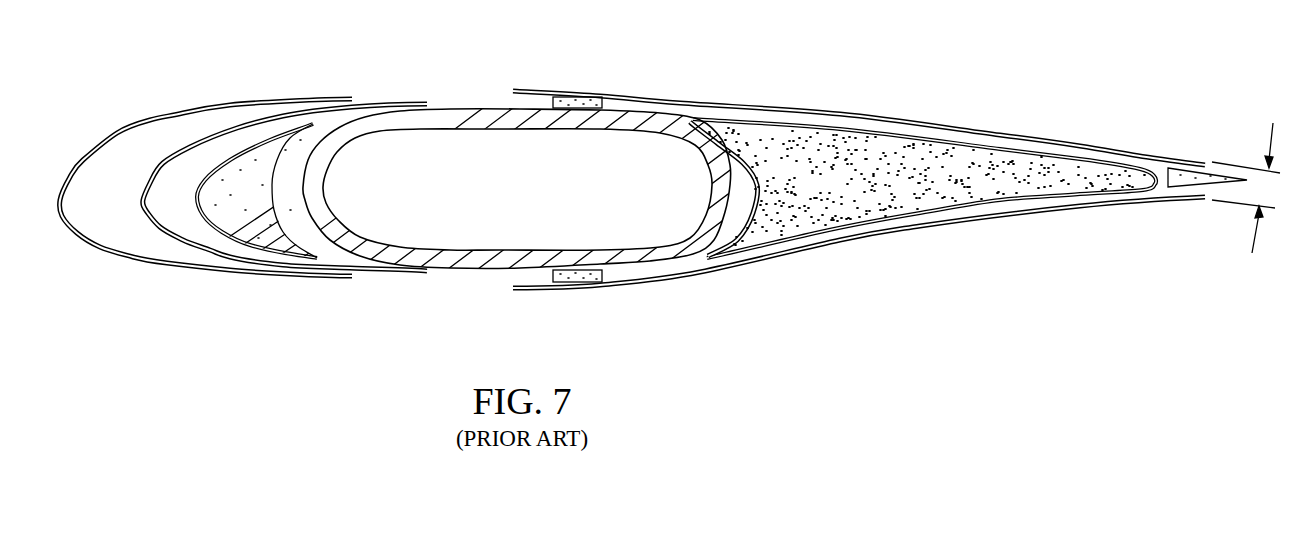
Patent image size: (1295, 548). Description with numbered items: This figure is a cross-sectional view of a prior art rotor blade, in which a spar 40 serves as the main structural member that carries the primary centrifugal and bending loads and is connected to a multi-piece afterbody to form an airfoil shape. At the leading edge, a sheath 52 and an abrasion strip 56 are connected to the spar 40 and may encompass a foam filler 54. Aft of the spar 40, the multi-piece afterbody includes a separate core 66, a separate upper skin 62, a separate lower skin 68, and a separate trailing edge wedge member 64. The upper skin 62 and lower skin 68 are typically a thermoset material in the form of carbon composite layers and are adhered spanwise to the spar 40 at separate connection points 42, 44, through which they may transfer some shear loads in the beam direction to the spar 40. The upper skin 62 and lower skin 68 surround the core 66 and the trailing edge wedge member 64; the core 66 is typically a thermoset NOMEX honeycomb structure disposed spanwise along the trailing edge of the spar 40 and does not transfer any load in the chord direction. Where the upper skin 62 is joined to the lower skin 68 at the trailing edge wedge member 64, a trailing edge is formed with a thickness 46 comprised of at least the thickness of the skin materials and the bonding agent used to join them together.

The spar 40 is at (477, 117).
The connection point 42 is at (587, 100).
The connection point 44 is at (586, 283).
The thickness 46 is at (1272, 138).
The sheath 52 is at (190, 146).
The foam filler 54 is at (231, 232).
The abrasion strip 56 is at (120, 130).
The upper skin 62 is at (730, 102).
The trailing edge wedge member 64 is at (1180, 180).
The core 66 is at (910, 150).
The lower skin 68 is at (734, 267).